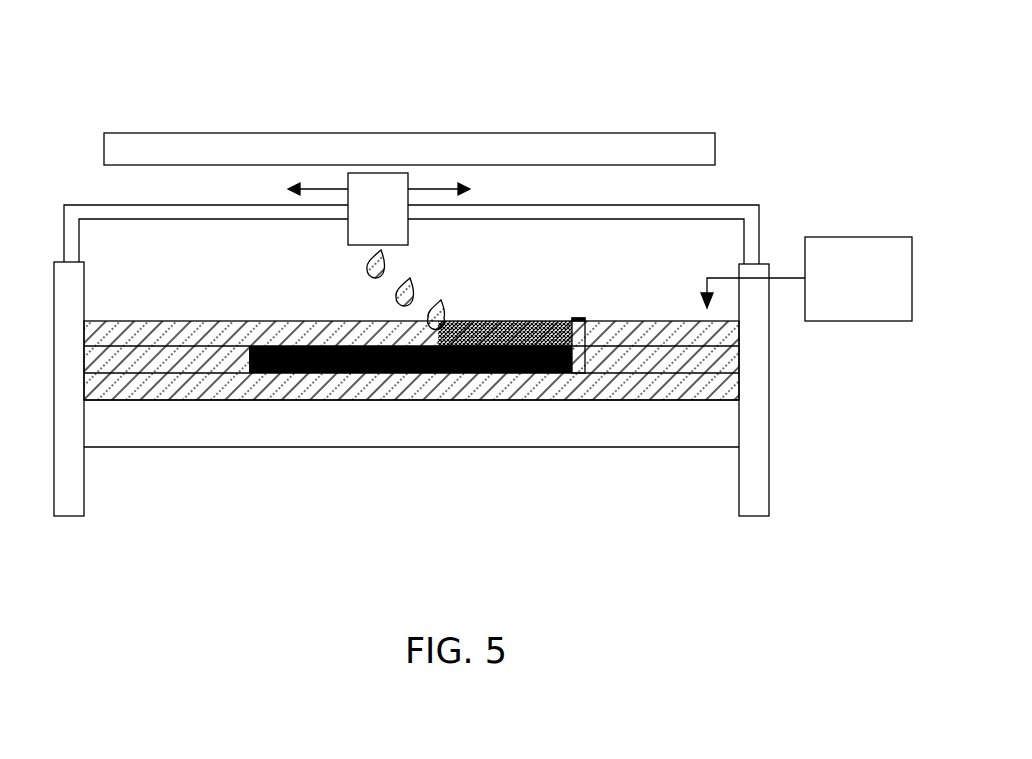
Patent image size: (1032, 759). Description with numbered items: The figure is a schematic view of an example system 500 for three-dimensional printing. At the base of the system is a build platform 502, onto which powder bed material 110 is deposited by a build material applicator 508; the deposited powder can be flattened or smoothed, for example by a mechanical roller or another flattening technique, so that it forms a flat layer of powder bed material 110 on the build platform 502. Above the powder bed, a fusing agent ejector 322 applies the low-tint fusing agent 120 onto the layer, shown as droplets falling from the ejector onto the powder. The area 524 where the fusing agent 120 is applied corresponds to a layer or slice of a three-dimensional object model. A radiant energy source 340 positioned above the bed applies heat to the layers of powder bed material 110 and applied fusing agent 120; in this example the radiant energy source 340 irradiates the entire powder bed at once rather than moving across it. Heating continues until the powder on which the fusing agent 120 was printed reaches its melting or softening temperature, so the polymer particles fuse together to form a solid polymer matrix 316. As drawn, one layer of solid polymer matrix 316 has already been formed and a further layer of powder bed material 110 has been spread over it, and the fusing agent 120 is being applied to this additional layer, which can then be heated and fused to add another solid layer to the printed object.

The system for three-dimensional printing 500 is at (152, 53).
The radiant energy source 340 is at (409, 149).
The fusing agent ejector 322 is at (379, 209).
The low-tint fusing agent 120 is at (367, 265).
The powder bed material 110 is at (152, 353).
The solid polymer matrix 316 is at (375, 365).
The area where the fusing agent is applied 524 is at (485, 335).
The build platform 502 is at (576, 432).
The build material applicator 508 is at (806, 279).